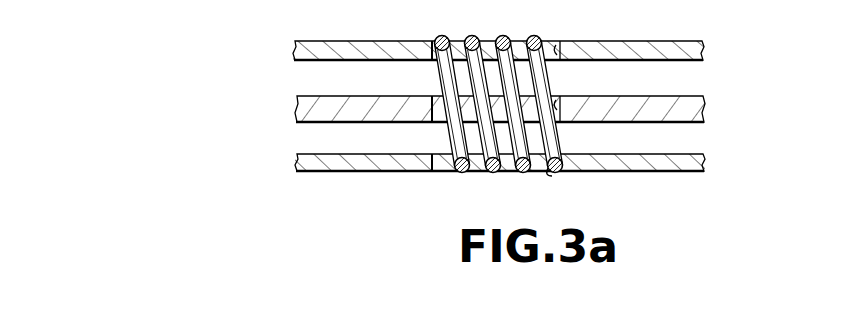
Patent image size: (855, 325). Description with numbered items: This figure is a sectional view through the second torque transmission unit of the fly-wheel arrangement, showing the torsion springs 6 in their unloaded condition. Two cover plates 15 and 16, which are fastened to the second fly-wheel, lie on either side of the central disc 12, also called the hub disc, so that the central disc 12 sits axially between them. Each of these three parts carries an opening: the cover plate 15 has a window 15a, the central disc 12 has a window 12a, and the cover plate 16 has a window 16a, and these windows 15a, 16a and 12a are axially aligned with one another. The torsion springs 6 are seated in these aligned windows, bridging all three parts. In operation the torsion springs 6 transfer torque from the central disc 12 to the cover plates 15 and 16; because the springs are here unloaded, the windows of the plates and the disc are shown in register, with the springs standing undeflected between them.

The cover plate 15 is at (367, 41).
The central disc 12 is at (300, 108).
The cover plate 16 is at (344, 160).
The torsion springs 6 is at (474, 35).
The window 15a is at (556, 45).
The window 12a is at (561, 99).
The window 16a is at (553, 173).